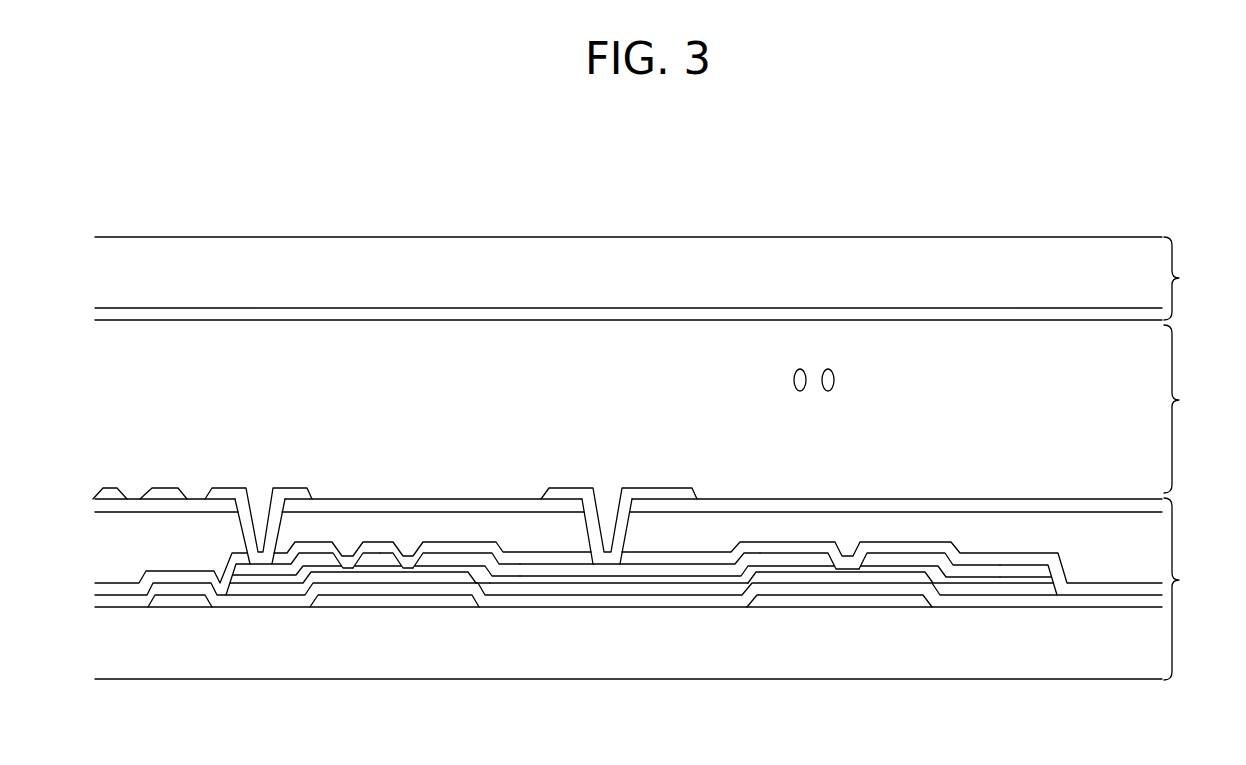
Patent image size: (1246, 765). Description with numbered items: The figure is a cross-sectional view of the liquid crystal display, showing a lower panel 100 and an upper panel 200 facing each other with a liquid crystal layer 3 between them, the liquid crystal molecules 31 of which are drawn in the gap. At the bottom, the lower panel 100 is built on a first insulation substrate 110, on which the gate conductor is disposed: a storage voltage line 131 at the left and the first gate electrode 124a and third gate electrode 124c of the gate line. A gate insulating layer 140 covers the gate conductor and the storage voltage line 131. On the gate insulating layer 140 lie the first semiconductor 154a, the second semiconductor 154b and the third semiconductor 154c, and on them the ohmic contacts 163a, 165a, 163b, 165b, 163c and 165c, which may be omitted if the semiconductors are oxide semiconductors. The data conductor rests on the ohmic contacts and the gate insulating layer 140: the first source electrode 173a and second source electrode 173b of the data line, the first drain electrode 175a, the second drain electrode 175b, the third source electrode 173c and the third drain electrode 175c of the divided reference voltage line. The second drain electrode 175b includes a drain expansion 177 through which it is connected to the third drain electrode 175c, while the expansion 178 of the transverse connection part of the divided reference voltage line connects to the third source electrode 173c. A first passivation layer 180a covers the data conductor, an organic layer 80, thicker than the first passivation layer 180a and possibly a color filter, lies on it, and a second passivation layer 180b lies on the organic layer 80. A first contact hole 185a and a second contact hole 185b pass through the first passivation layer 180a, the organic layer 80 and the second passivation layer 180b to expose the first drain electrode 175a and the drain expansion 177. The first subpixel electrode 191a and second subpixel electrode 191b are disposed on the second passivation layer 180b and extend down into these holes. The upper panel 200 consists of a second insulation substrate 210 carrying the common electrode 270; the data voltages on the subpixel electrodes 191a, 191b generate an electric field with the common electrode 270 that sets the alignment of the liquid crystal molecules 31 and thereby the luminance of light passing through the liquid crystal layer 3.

The liquid crystal layer 3 is at (1180, 409).
The liquid crystal molecules 31 is at (834, 380).
The organic layer 80 is at (965, 520).
The lower panel 100 is at (1188, 589).
The first insulation substrate 110 is at (715, 655).
The first gate electrode 124a is at (330, 601).
The third gate electrode 124c is at (830, 601).
The storage voltage line 131 is at (178, 602).
The gate insulating layer 140 is at (603, 601).
The first semiconductor 154a is at (318, 580).
The second semiconductor 154b is at (460, 579).
The third semiconductor 154c is at (877, 579).
The ohmic contact 163a is at (390, 571).
The ohmic contact 163b is at (428, 571).
The ohmic contact 163c is at (810, 570).
The ohmic contact 165a is at (243, 579).
The ohmic contact 165b is at (477, 571).
The ohmic contact 165c is at (908, 570).
The first source electrode 173a is at (370, 557).
The second source electrode 173b is at (388, 557).
The third source electrode 173c is at (783, 557).
The first drain electrode 175a is at (265, 571).
The second drain electrode 175b is at (456, 557).
The third drain electrode 175c is at (893, 558).
The drain expansion 177 is at (667, 570).
The expansion 178 is at (1027, 570).
The first passivation layer 180a is at (113, 590).
The second passivation layer 180b is at (1101, 506).
The first contact hole 185a is at (240, 528).
The second contact hole 185b is at (590, 528).
The first subpixel electrode 191a is at (109, 487).
The second subpixel electrode 191b is at (575, 487).
The upper panel 200 is at (1188, 278).
The second insulation substrate 210 is at (668, 252).
The common electrode 270 is at (788, 315).